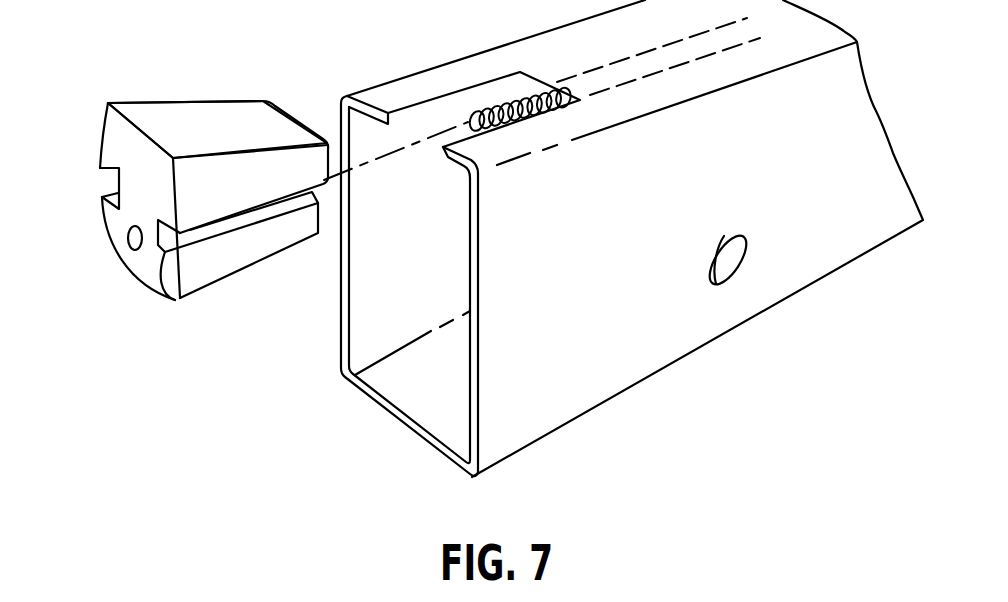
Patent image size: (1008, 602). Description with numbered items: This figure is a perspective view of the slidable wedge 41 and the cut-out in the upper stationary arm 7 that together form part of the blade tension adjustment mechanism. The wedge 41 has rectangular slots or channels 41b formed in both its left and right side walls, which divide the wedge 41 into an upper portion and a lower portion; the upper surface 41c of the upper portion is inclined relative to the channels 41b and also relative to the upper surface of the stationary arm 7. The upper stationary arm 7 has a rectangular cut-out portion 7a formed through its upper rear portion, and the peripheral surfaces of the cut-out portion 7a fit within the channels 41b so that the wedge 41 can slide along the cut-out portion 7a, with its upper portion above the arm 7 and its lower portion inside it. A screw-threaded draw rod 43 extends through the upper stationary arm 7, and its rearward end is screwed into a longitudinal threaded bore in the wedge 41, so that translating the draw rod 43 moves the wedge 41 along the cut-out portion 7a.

The upper stationary arm 7 is at (695, 344).
The rectangular cut-out portion 7a is at (430, 123).
The wedge 41 is at (122, 263).
The rectangular slots or channels 41b is at (105, 187).
The upper surface 41c is at (183, 123).
The screw-threaded draw rod 43 is at (538, 100).